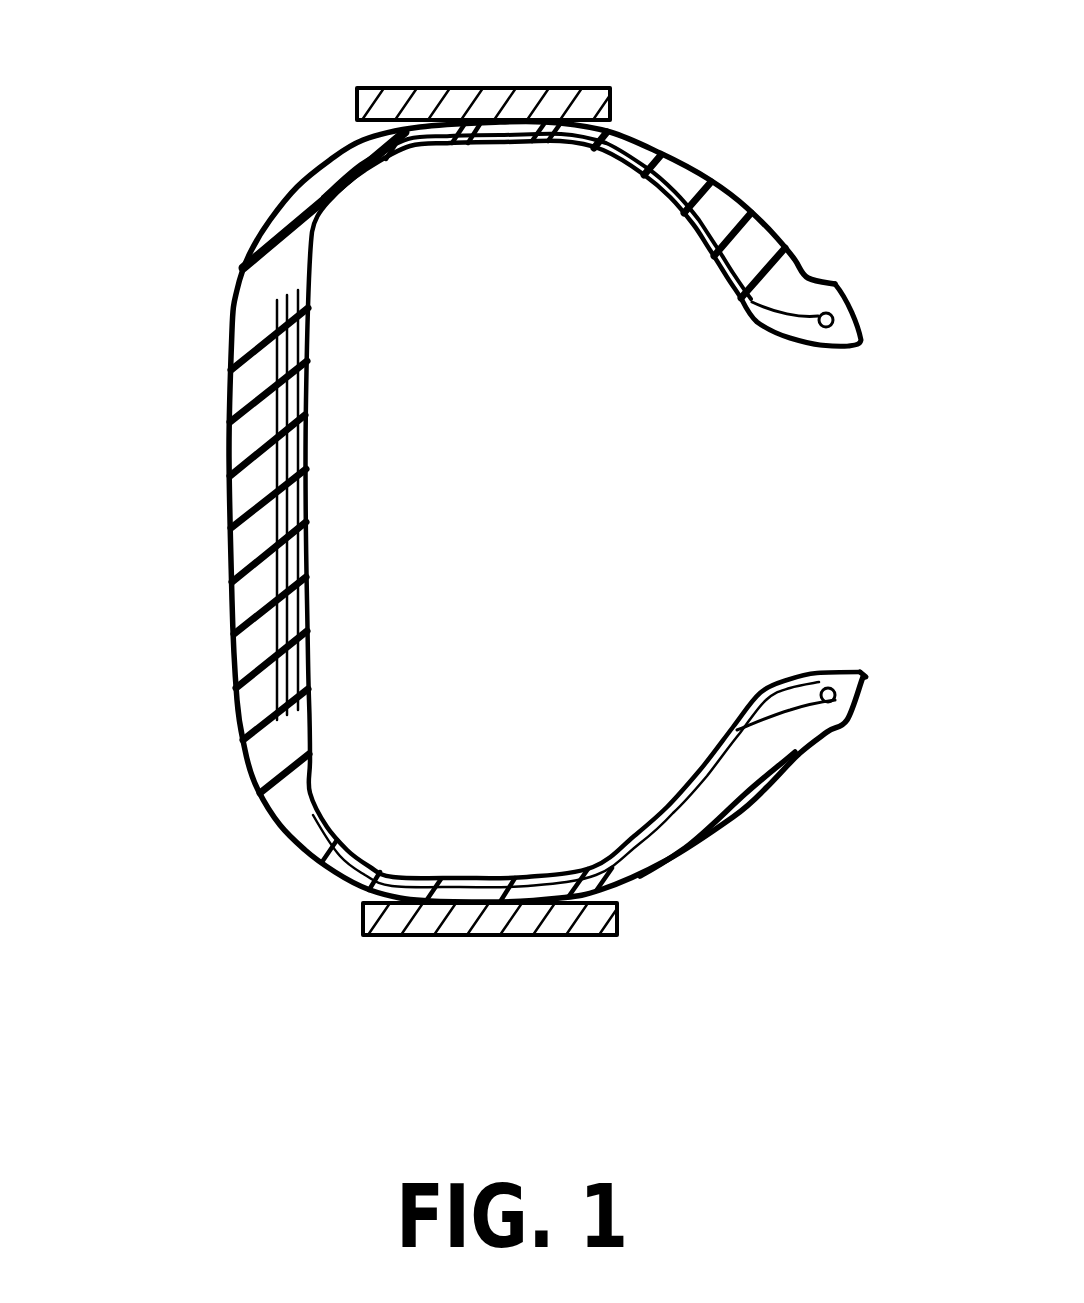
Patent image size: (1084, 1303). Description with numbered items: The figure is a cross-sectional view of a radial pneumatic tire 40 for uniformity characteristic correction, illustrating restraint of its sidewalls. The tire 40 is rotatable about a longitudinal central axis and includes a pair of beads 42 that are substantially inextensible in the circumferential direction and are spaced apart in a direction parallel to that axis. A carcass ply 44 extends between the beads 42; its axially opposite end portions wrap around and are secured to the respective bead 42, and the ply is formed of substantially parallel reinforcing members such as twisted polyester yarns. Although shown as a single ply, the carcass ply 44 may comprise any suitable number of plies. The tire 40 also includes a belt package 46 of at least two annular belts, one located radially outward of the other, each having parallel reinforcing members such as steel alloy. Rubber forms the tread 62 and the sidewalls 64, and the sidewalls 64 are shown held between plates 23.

The plates 23 is at (612, 89).
The radial pneumatic tire 40 is at (271, 210).
The beads 42 is at (830, 345).
The carcass ply 44 is at (757, 325).
The belt package 46 is at (276, 714).
The tread 62 is at (236, 614).
The sidewalls 64 is at (403, 872).